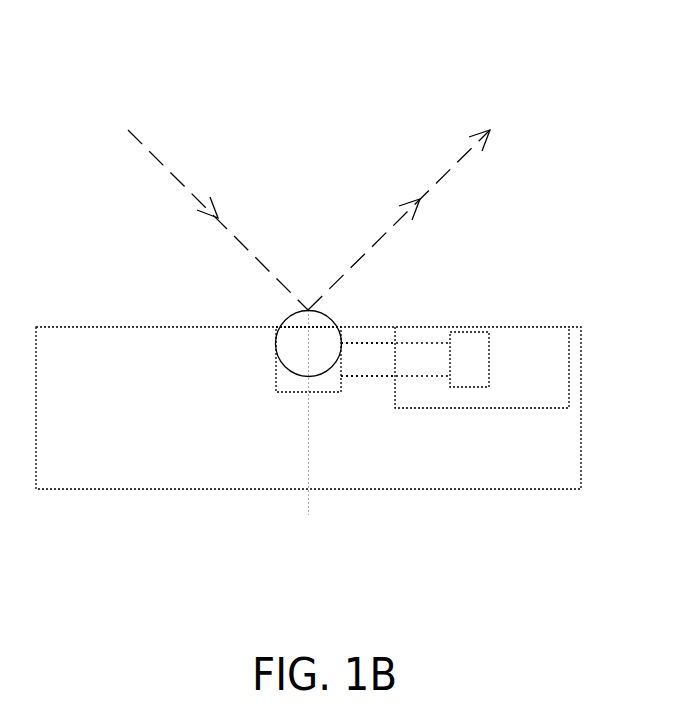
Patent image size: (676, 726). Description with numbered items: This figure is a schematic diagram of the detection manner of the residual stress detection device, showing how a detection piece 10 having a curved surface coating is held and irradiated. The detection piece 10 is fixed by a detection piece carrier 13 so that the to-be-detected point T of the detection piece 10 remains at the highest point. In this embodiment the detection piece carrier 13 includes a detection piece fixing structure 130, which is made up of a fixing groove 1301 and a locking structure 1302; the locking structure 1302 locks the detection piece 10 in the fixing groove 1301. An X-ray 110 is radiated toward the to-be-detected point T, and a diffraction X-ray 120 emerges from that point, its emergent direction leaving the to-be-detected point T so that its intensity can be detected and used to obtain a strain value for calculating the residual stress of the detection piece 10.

The detection piece 10 is at (332, 320).
The to-be-detected point T is at (307, 310).
The detection piece carrier 13 is at (219, 118).
The X-ray 110 is at (180, 181).
The diffraction X-ray 120 is at (423, 196).
The detection piece fixing structure 130 is at (445, 567).
The fixing groove 1301 is at (292, 392).
The locking structure 1302 is at (368, 375).